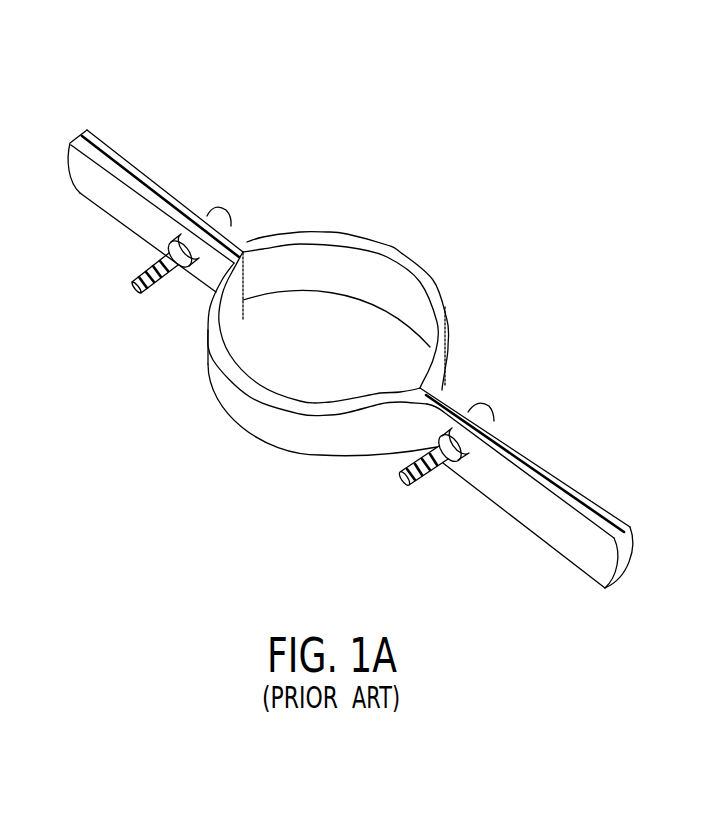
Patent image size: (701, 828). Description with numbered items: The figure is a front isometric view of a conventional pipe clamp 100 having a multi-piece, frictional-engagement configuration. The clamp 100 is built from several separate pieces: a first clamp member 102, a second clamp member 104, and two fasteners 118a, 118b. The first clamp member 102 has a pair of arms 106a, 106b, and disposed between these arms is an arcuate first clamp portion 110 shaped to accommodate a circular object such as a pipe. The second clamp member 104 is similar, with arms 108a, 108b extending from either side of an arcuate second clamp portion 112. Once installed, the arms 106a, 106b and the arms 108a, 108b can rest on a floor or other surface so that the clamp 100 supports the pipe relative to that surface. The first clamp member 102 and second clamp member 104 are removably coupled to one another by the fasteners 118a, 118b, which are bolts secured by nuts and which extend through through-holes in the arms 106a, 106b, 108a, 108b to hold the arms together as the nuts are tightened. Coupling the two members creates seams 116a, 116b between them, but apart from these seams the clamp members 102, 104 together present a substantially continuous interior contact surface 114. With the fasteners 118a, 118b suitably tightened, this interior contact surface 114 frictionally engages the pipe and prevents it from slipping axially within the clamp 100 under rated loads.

The pipe clamp 100 is at (343, 101).
The first clamp member 102 is at (70, 152).
The second clamp member 104 is at (88, 130).
The arm 106a is at (105, 190).
The arm 106b is at (548, 525).
The arm 108a is at (148, 166).
The arm 108b is at (560, 487).
The first clamp portion 110 is at (248, 383).
The second clamp portion 112 is at (384, 246).
The interior contact surface 114 is at (231, 322).
The seam 116a is at (247, 251).
The seam 116b is at (418, 387).
The fastener 118a is at (135, 289).
The fastener 118b is at (402, 488).